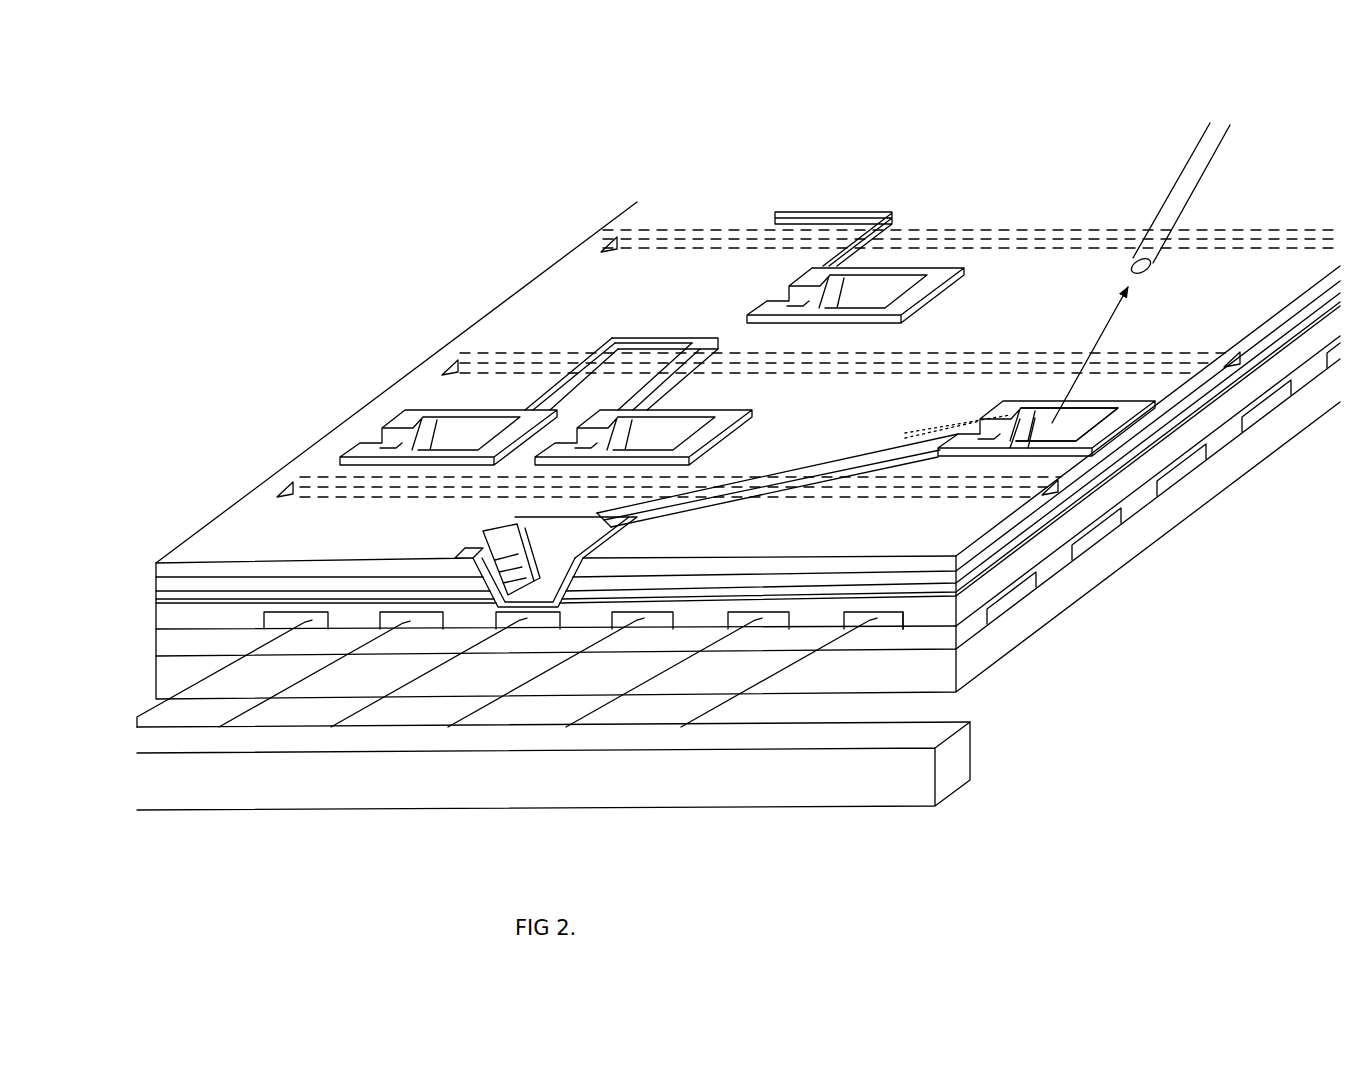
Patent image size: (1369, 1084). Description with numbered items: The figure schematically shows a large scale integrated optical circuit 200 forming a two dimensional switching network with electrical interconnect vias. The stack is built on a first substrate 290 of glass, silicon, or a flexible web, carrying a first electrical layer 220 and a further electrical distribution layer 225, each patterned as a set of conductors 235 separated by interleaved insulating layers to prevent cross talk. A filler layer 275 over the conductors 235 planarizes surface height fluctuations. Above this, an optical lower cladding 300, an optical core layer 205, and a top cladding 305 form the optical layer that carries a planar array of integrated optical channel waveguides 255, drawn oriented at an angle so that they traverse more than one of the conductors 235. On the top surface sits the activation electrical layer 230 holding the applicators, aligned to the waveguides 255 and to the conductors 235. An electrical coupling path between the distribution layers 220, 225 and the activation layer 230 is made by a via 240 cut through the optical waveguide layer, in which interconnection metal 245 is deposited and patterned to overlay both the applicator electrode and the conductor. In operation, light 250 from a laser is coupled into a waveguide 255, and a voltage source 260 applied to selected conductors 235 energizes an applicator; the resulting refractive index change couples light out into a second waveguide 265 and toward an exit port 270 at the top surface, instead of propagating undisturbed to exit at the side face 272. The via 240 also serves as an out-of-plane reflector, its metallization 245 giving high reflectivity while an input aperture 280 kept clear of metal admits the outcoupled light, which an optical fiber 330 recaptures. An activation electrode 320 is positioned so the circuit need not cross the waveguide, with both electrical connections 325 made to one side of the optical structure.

The integrated optical circuit 200 is at (1092, 814).
The optical core layer 205 is at (178, 584).
The first electrical layer 220 is at (173, 647).
The electrical distribution layer 225 is at (170, 618).
The activation electrical layer 230 is at (703, 503).
The conductors 235 is at (903, 618).
The via 240 is at (551, 542).
The interconnection metal 245 is at (575, 578).
The light 250 is at (236, 489).
The integrated optical channel waveguides 255 is at (480, 353).
The voltage source 260 is at (553, 766).
The second waveguide 265 is at (925, 433).
The exit port 270 is at (1050, 423).
The exit port in side face 272 is at (1078, 429).
The filler layer 275 is at (948, 610).
The input aperture 280 is at (508, 554).
The first substrate 290 is at (173, 677).
The optical lower cladding 300 is at (173, 596).
The top cladding 305 is at (178, 573).
The activation electrode 320 is at (650, 340).
The electrical connections 325 is at (652, 377).
The optical fiber 330 is at (1206, 175).